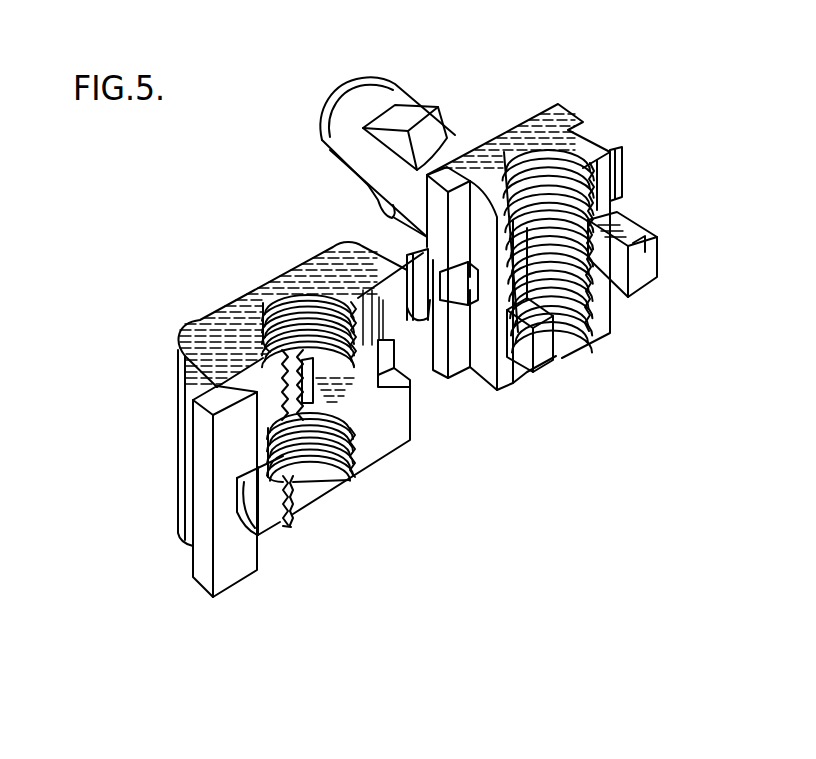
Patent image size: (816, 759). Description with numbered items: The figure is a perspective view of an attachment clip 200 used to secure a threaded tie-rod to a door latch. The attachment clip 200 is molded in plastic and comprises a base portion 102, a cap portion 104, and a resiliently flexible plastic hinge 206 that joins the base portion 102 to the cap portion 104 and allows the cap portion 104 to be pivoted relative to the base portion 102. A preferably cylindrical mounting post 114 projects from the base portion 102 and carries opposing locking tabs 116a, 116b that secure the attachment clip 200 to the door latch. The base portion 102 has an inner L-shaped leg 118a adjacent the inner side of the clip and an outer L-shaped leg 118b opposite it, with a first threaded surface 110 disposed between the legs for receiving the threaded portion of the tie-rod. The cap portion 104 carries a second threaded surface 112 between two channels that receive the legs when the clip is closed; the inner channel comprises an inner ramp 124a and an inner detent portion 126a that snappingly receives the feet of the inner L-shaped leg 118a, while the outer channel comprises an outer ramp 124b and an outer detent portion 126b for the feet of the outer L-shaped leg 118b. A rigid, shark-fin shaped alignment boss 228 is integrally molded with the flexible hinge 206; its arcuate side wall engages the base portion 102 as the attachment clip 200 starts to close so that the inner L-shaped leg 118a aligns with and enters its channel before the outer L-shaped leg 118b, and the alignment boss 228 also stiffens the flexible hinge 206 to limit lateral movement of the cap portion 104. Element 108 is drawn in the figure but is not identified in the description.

The base portion 102 is at (547, 113).
The cap portion 104 is at (203, 340).
The retaining plate 108 is at (624, 158).
The first threaded surface 110 is at (563, 333).
The second threaded surface 112 is at (327, 473).
The mounting post 114 is at (352, 110).
The locking tab 116a is at (437, 103).
The locking tab 116b is at (370, 200).
The inner L-shaped leg 118a is at (537, 357).
The outer L-shaped leg 118b is at (645, 287).
The inner ramp 124a is at (407, 385).
The outer ramp 124b is at (250, 573).
The inner detent portion 126a is at (360, 365).
The outer detent portion 126b is at (277, 530).
The attachment clip 200 is at (506, 515).
The flexible hinge 206 is at (390, 283).
The alignment boss 228 is at (460, 370).